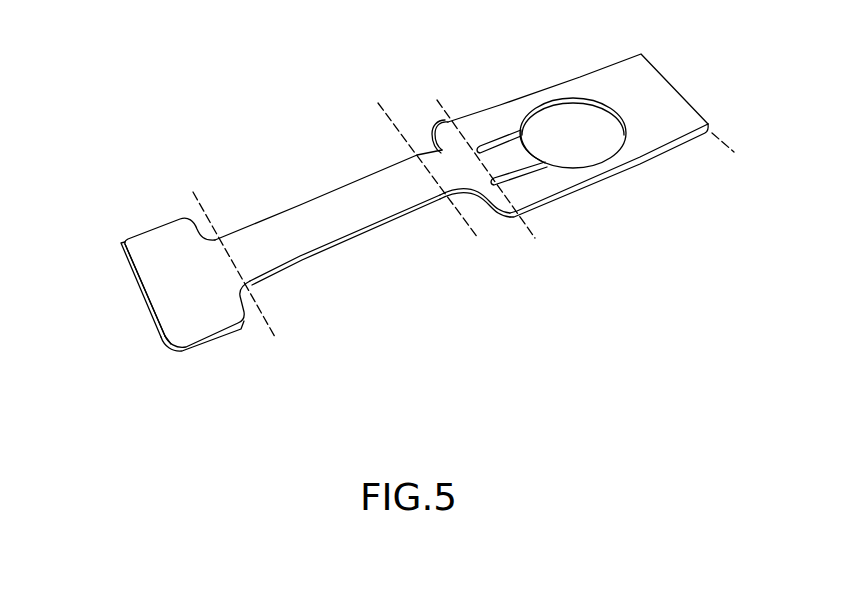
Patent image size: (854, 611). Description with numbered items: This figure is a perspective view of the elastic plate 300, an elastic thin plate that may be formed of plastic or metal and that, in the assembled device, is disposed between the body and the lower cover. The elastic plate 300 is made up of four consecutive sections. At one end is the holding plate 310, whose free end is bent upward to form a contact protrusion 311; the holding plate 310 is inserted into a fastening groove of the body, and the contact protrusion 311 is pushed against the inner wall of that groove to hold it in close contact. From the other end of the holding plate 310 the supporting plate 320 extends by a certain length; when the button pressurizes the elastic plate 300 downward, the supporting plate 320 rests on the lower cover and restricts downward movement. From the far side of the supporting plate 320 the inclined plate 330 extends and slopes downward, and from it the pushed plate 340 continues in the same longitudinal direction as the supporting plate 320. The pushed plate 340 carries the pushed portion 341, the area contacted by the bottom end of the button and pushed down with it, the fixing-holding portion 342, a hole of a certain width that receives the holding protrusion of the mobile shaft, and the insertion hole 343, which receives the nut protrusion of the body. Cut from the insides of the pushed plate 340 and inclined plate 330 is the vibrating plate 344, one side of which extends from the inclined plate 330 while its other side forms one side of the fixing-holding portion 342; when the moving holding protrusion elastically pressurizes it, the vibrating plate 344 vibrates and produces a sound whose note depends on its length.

The elastic plate 300 is at (225, 107).
The holding plate 310 is at (210, 343).
The contact protrusion 311 is at (140, 283).
The supporting plate 320 is at (327, 230).
The inclined plate 330 is at (462, 195).
The pushed plate 340 is at (670, 153).
The pushed portion 341 is at (662, 97).
The fixing-holding portion 342 is at (523, 155).
The insertion hole 343 is at (575, 134).
The vibrating plate 344 is at (514, 167).